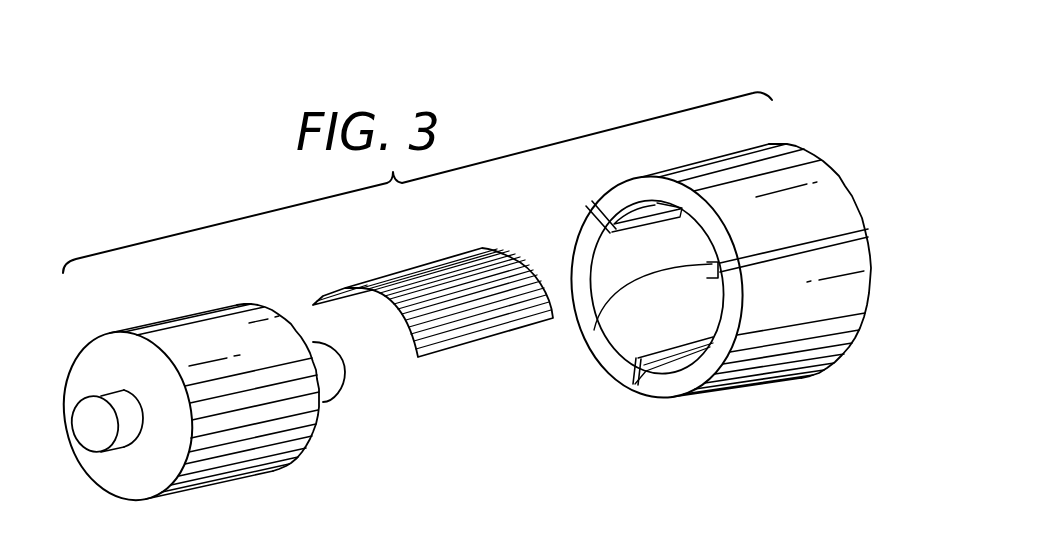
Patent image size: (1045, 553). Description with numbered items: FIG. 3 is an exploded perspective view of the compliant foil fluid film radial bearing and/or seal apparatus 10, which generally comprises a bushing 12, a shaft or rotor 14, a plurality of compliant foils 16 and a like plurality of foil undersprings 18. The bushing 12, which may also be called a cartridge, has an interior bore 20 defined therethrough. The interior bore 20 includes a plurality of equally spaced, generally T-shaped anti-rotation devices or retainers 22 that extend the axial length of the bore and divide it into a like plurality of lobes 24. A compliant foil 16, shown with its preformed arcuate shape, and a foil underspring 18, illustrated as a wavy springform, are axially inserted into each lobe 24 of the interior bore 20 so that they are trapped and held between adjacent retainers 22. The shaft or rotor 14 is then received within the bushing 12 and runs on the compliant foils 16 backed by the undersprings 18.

The compliant foil fluid film radial bearing and/or seal apparatus 10 is at (662, 86).
The bushing 12 is at (699, 291).
The shaft or rotor 14 is at (235, 491).
The compliant foil 16 is at (433, 302).
The foil underspring 18 is at (512, 258).
The interior bore 20 is at (611, 260).
The anti-rotation devices or retainers 22 is at (626, 221).
The lobe 24 is at (640, 212).